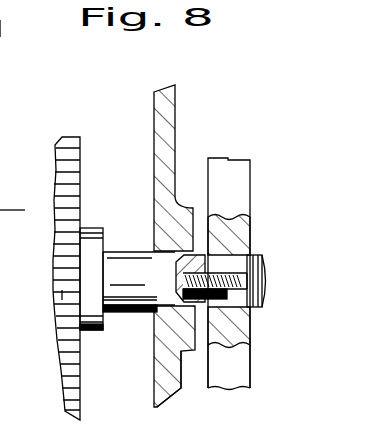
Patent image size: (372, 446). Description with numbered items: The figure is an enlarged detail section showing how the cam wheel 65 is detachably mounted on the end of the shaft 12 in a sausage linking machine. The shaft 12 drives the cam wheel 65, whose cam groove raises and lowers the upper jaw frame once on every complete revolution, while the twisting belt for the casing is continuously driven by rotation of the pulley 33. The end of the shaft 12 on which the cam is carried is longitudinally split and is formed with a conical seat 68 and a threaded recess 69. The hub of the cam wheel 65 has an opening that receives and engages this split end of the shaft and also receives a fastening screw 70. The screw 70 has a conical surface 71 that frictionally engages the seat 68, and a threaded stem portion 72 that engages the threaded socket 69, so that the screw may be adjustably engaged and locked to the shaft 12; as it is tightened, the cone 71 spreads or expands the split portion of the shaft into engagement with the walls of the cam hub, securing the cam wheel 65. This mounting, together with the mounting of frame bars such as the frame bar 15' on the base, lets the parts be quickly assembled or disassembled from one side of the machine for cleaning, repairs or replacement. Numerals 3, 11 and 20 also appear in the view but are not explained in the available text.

The wall 3 is at (165, 108).
The roller assembly 11 is at (62, 295).
The shaft 12 is at (122, 262).
The frame bar 15' is at (18, 103).
The ribbed hub 20 is at (3, 169).
The pulley 33 is at (0, 71).
The cam wheel 65 is at (222, 158).
The conical seat 68 is at (232, 215).
The threaded recess 69 is at (148, 315).
The fastening screw 70 is at (238, 345).
The conical surface 71 is at (202, 343).
The threaded stem portion 72 is at (197, 238).